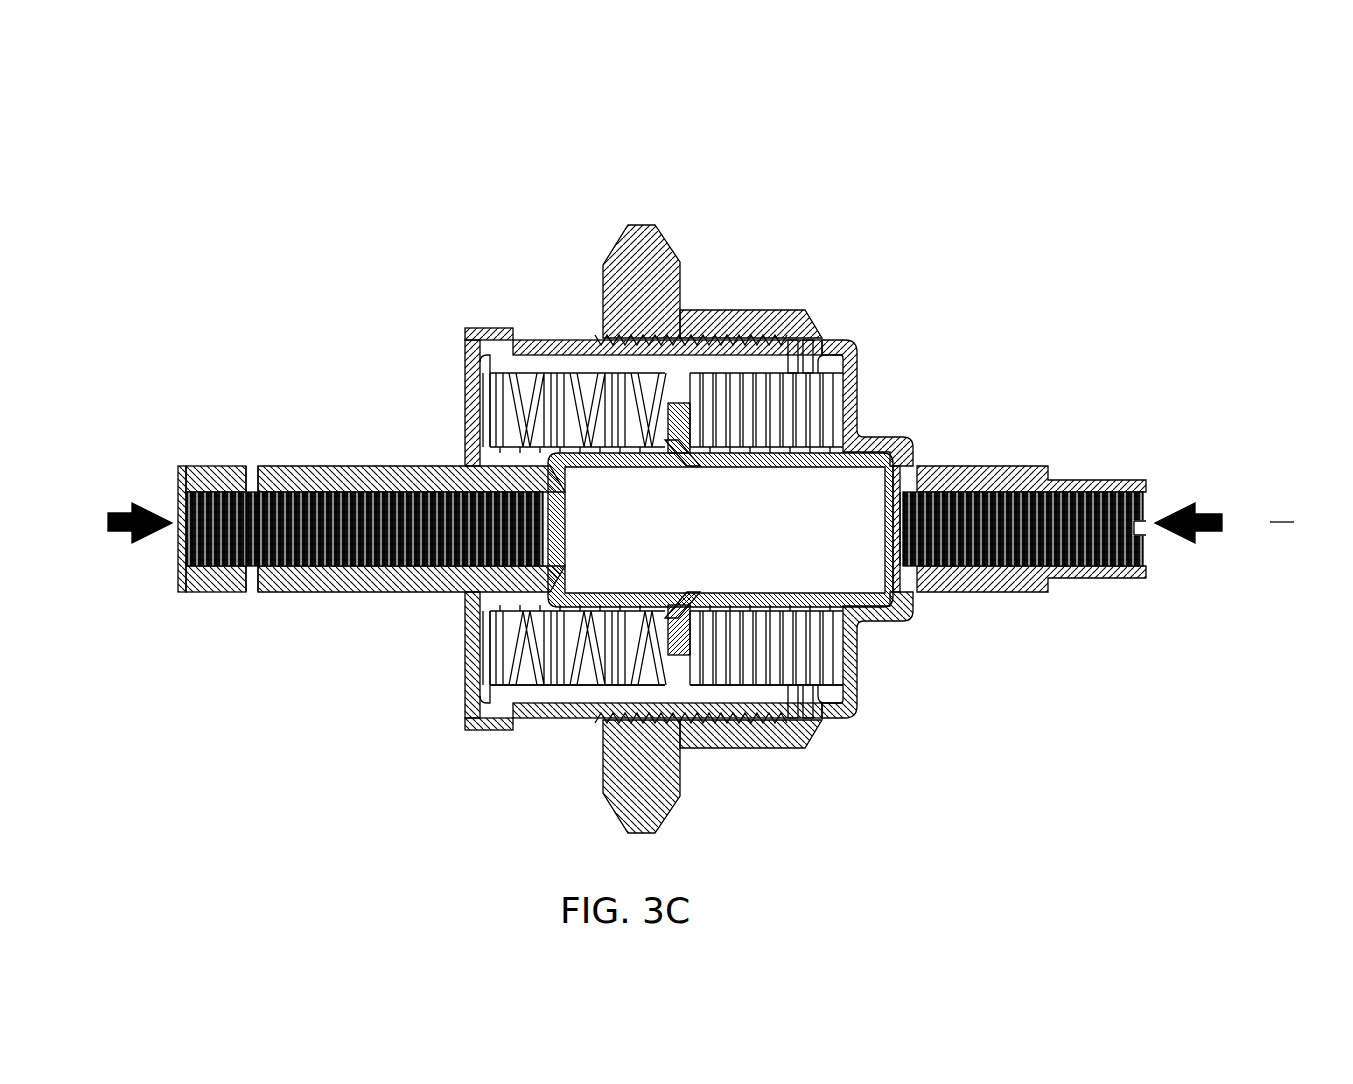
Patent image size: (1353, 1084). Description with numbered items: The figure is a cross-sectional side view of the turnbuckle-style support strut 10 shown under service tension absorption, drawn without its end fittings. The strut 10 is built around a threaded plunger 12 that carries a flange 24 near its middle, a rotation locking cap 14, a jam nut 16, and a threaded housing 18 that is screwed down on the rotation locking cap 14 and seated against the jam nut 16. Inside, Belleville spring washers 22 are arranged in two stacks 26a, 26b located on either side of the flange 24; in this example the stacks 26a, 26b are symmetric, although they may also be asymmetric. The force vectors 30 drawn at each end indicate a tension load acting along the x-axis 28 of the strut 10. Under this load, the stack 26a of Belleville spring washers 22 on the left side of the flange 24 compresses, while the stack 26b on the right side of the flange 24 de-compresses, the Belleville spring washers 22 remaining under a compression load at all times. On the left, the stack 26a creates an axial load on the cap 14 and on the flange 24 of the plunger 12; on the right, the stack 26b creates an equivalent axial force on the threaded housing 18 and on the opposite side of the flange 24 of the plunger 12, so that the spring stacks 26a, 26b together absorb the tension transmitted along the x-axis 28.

The turnbuckle-style support strut 10 is at (668, 146).
The threaded plunger 12 is at (352, 466).
The rotation locking cap 14 is at (474, 330).
The jam nut 16 is at (617, 252).
The threaded housing 18 is at (1020, 466).
The Belleville spring washers 22 is at (560, 377).
The flange 24 is at (686, 350).
The stack of Belleville spring washers 26a is at (549, 692).
The stack of Belleville spring washers 26b is at (750, 692).
The x-axis 28 is at (1270, 522).
The force vectors 30 is at (666, 523).